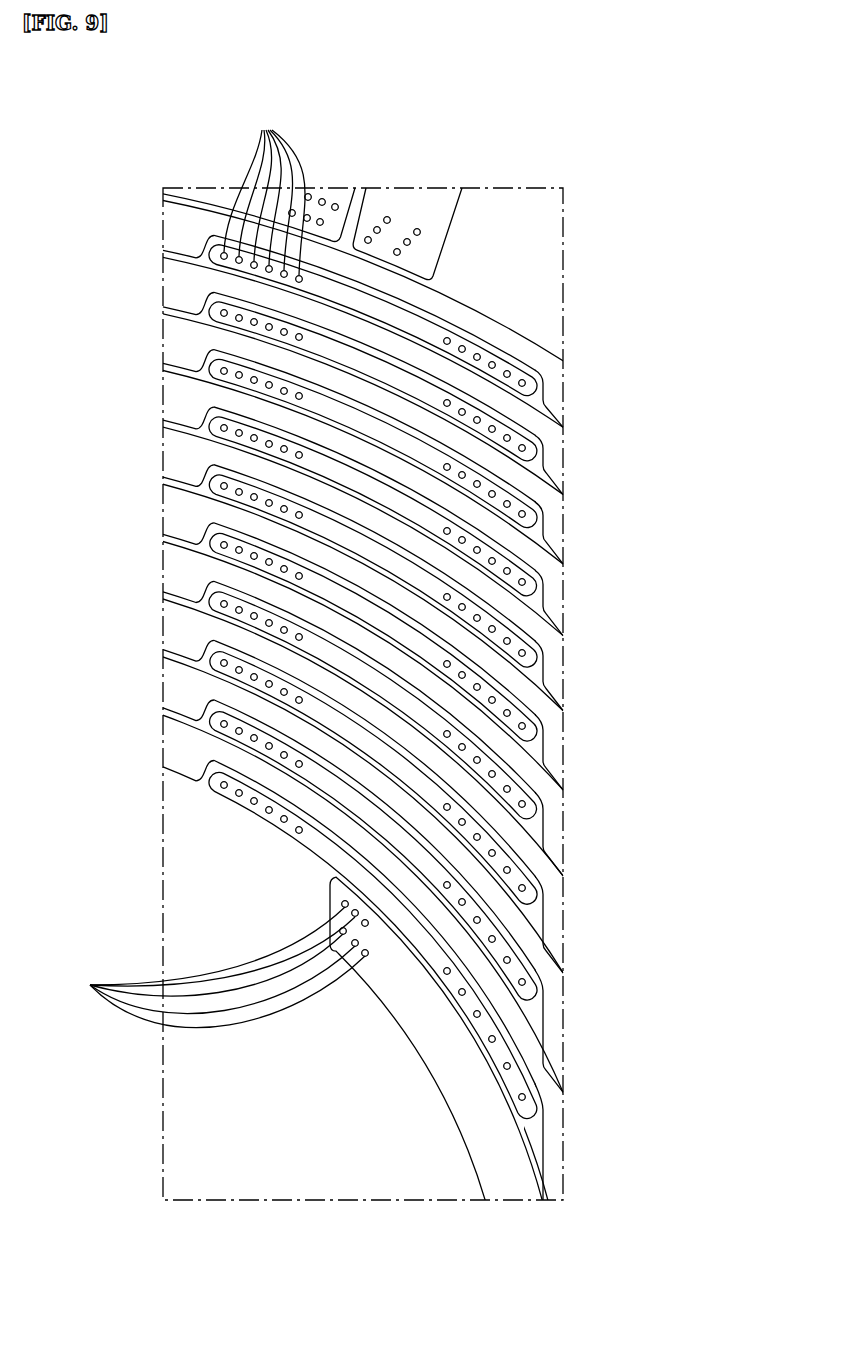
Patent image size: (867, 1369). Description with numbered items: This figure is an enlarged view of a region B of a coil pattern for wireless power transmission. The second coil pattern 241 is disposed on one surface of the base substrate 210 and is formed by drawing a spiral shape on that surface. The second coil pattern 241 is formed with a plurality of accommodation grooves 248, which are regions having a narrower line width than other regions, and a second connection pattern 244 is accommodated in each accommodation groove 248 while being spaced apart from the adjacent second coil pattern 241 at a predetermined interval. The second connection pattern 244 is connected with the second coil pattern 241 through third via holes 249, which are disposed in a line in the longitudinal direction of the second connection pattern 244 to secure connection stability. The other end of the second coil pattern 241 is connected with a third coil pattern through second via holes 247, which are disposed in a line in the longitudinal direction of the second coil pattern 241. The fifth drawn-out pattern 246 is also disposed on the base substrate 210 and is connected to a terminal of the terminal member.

The base substrate 210 is at (540, 226).
The region B is at (522, 183).
The second coil pattern 241 is at (556, 524).
The second connection pattern 244 is at (405, 316).
The fifth drawn-out pattern 246 is at (422, 205).
The second via hole 247 is at (204, 967).
The accommodation groove 248 is at (206, 352).
The third via hole 249 is at (264, 188).